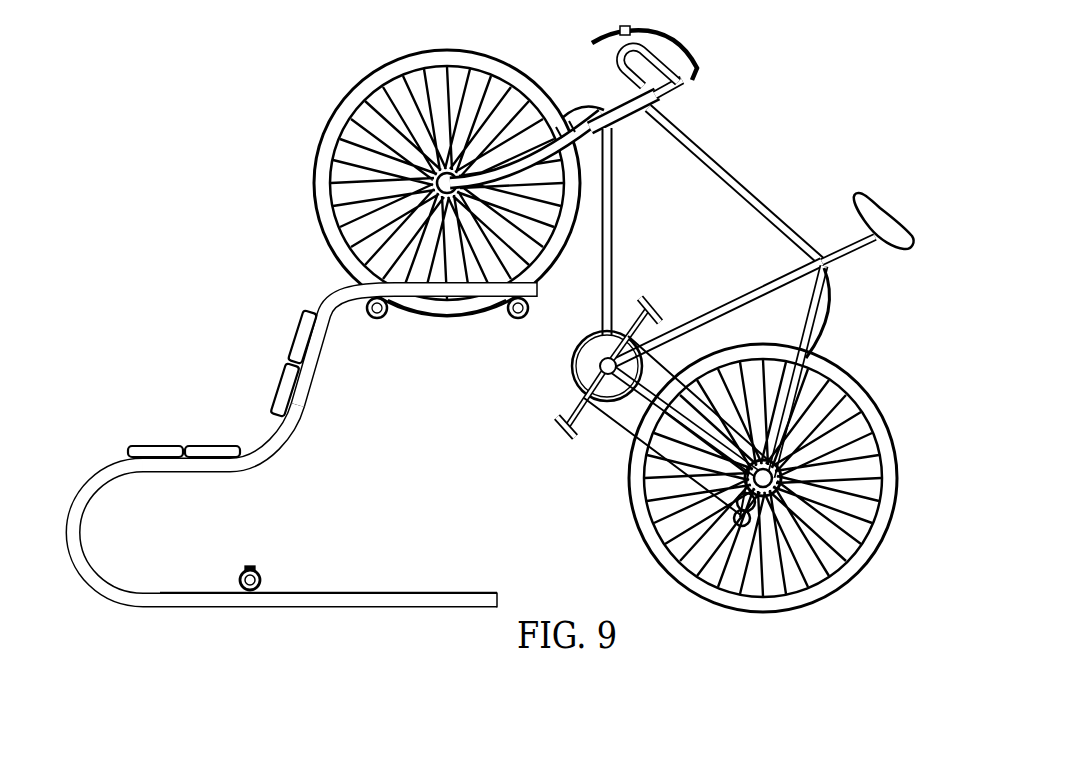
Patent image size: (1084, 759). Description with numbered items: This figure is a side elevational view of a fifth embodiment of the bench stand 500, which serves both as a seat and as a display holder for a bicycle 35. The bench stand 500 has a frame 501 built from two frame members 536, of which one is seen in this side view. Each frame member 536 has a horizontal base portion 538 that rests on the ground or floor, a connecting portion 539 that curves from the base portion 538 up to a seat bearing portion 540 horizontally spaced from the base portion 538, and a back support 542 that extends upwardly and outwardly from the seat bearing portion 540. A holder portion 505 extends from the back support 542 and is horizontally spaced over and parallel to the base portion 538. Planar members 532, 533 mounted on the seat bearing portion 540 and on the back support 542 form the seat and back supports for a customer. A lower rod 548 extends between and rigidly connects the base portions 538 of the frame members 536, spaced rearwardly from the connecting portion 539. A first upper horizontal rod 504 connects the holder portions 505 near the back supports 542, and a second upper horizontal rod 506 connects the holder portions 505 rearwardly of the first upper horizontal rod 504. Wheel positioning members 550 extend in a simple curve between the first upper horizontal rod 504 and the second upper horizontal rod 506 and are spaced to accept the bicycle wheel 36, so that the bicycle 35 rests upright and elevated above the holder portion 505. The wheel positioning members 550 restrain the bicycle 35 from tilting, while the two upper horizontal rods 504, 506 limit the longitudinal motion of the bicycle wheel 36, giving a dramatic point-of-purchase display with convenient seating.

The bicycle 35 is at (725, 167).
The bicycle wheel 36 is at (459, 49).
The bench stand 500 is at (322, 287).
The frame 501 is at (432, 607).
The first upper horizontal rod 504 is at (375, 316).
The holder portion 505 is at (455, 300).
The second upper horizontal rod 506 is at (508, 316).
The planar member 532 is at (157, 443).
The planar member 533 is at (296, 337).
The frame member 536 is at (287, 608).
The base portion 538 is at (386, 591).
The connecting portion 539 is at (70, 555).
The seat bearing portion 540 is at (220, 475).
The back support 542 is at (312, 392).
The lower rod 548 is at (258, 568).
The wheel positioning member 550 is at (553, 262).